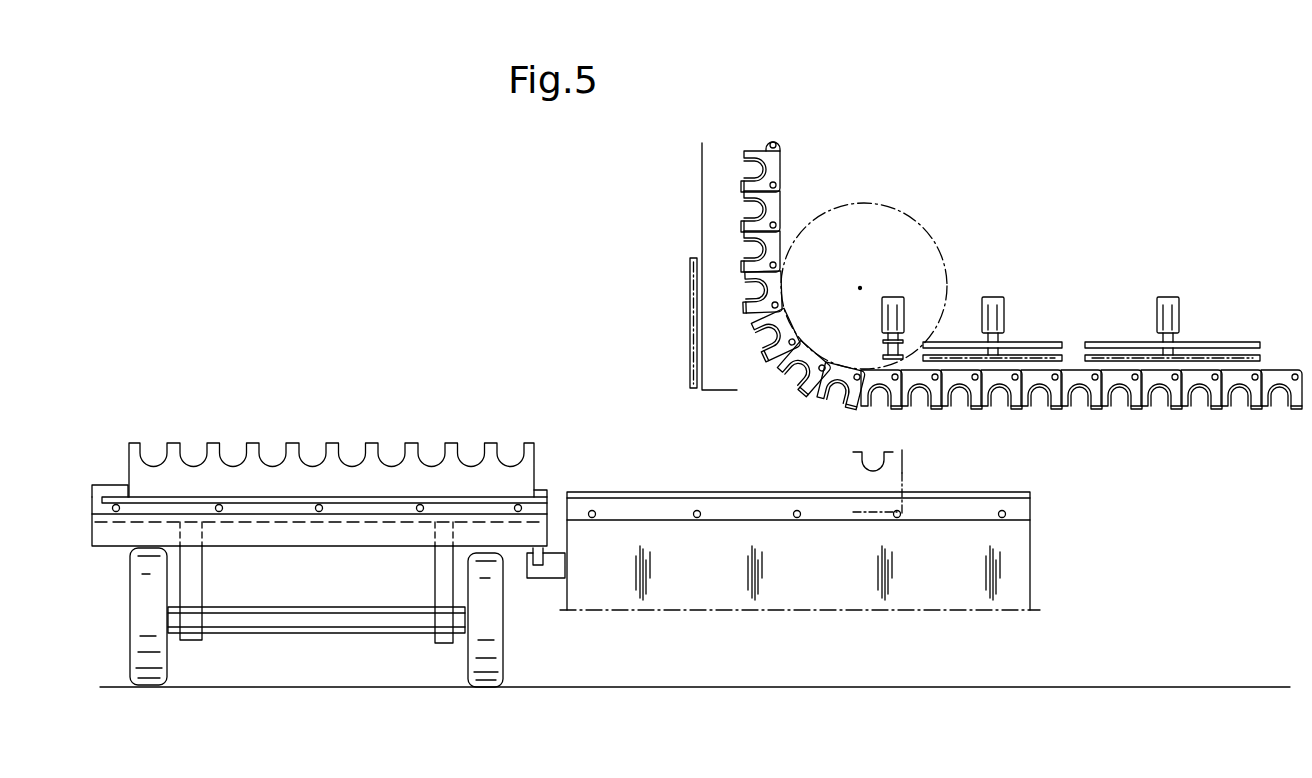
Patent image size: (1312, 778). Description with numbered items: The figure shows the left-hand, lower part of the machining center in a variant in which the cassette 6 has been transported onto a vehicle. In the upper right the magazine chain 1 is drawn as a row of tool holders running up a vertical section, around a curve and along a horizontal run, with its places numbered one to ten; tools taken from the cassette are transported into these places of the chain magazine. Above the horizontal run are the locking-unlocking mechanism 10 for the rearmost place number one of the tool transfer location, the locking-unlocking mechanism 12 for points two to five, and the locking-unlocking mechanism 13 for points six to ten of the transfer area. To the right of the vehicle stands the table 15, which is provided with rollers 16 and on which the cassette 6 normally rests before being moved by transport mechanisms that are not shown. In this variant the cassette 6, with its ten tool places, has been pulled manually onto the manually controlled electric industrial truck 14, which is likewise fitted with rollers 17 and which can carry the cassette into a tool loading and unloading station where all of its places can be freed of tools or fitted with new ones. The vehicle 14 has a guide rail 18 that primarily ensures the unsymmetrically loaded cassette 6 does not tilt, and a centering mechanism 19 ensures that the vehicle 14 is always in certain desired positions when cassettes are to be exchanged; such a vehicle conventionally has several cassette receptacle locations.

The magazine chain 1 is at (779, 168).
The cassette 6 is at (528, 458).
The locking-unlocking mechanism 10 is at (904, 297).
The locking-unlocking mechanism 12 is at (1010, 304).
The locking-unlocking mechanism 13 is at (1182, 308).
The industrial truck 14 is at (495, 650).
The table 15 is at (829, 519).
The rollers 16 is at (697, 518).
The rollers 17 is at (319, 512).
The guide rail 18 is at (118, 487).
The centering mechanism 19 is at (548, 567).